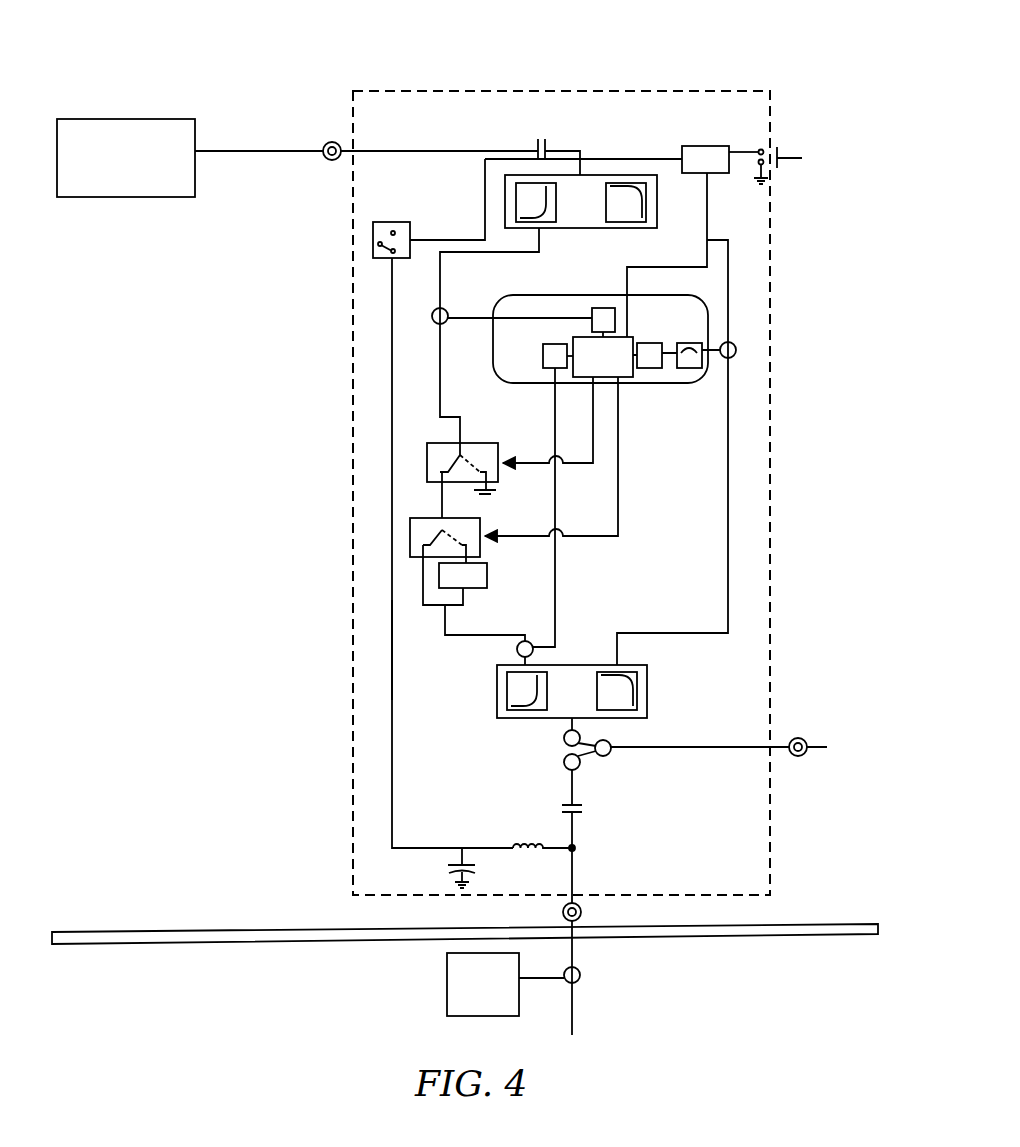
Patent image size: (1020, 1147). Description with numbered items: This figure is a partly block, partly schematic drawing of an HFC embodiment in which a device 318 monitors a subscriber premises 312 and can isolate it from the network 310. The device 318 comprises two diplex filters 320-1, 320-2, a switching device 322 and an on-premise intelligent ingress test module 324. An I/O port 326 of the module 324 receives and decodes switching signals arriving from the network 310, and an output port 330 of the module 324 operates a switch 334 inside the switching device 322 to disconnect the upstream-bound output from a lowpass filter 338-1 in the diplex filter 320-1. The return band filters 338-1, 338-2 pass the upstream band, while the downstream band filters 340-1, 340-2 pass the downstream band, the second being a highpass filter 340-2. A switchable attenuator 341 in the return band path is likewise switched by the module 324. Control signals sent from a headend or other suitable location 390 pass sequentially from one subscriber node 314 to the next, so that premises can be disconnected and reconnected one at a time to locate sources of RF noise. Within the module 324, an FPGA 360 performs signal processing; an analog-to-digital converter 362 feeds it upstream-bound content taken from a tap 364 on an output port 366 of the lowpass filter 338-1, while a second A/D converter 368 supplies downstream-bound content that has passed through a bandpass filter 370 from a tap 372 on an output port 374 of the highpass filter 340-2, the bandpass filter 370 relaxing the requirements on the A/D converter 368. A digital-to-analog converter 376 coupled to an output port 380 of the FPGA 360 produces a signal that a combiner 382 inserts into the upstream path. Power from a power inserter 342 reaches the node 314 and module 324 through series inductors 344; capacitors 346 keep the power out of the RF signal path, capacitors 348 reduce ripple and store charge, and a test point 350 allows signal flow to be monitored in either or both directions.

The network 310 is at (236, 143).
The subscriber premises 312 is at (272, 924).
The subscriber node 314 is at (339, 238).
The device for monitoring a subscriber premises 318 is at (706, 84).
The diplex filter 320-1 is at (588, 688).
The diplex filter 320-2 is at (619, 170).
The switching device 322 is at (346, 518).
The on-premise intelligent ingress test module 324 is at (748, 310).
The I/O port 326 is at (332, 138).
The output port 330 is at (593, 385).
The switch 334 is at (427, 462).
The lowpass filter 338-1 is at (505, 692).
The return band filter 338-2 is at (516, 205).
The downstream band filter 340-1 is at (637, 689).
The highpass filter 340-2 is at (646, 200).
The switchable attenuator 341 is at (487, 576).
The power inserter 342 is at (447, 978).
The series inductors 344 is at (525, 840).
The capacitors 346 is at (587, 808).
The capacitors 348 is at (445, 867).
The test points 350 is at (802, 738).
The FPGA 360 is at (633, 377).
The analog-to-digital converter 362 is at (543, 357).
The tap 364 is at (517, 652).
The output port 366 is at (530, 666).
The A/D converter 368 is at (650, 343).
The bandpass filter 370 is at (690, 343).
The tap 372 is at (737, 351).
The output port 374 is at (625, 230).
The digital-to-analog converter 376 is at (600, 308).
The output port 380 is at (590, 336).
The combiner 382 is at (432, 315).
The headend 390 is at (115, 203).